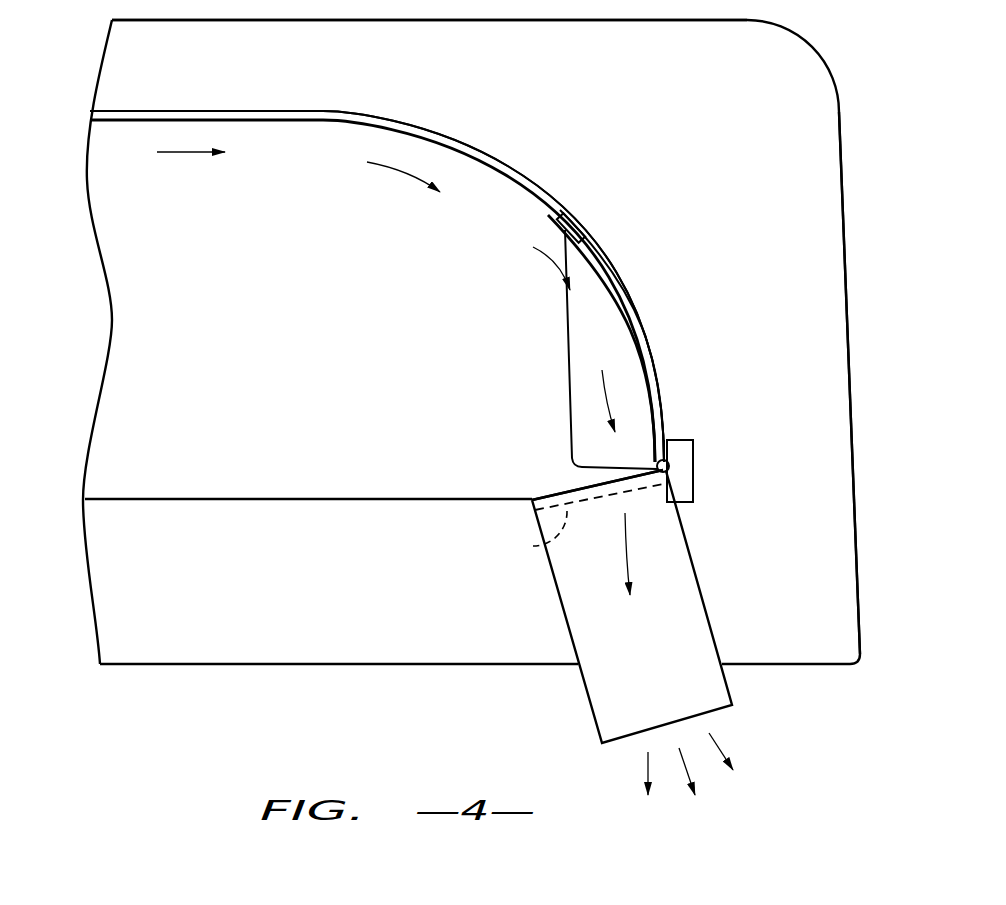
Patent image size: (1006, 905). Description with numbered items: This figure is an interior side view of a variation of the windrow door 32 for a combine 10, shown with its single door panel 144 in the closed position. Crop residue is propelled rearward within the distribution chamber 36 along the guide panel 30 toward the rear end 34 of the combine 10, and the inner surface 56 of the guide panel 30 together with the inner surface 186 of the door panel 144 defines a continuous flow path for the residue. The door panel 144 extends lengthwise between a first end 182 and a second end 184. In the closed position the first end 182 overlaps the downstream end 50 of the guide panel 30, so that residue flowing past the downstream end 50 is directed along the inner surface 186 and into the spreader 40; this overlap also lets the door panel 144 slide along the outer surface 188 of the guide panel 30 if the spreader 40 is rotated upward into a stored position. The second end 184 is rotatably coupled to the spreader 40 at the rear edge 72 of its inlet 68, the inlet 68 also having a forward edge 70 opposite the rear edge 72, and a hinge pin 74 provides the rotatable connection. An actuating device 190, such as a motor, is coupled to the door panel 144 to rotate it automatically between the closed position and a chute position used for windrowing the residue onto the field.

The combine 10 is at (905, 158).
The guide panel 30 is at (262, 98).
The windrow door 32 is at (665, 190).
The rear end 34 is at (847, 338).
The distribution chamber 36 is at (271, 323).
The spreader 40 is at (628, 669).
The downstream end 50 is at (562, 233).
The inner surface 56 is at (353, 125).
The inlet 68 is at (542, 544).
The forward edge 70 is at (532, 500).
The rear edge 72 is at (667, 486).
The hinge pin 74 is at (673, 477).
The door panel 144 is at (650, 323).
The first end 182 is at (578, 215).
The second end 184 is at (662, 446).
The inner surface 186 is at (623, 307).
The outer surface 188 is at (487, 158).
The actuating device 190 is at (694, 452).